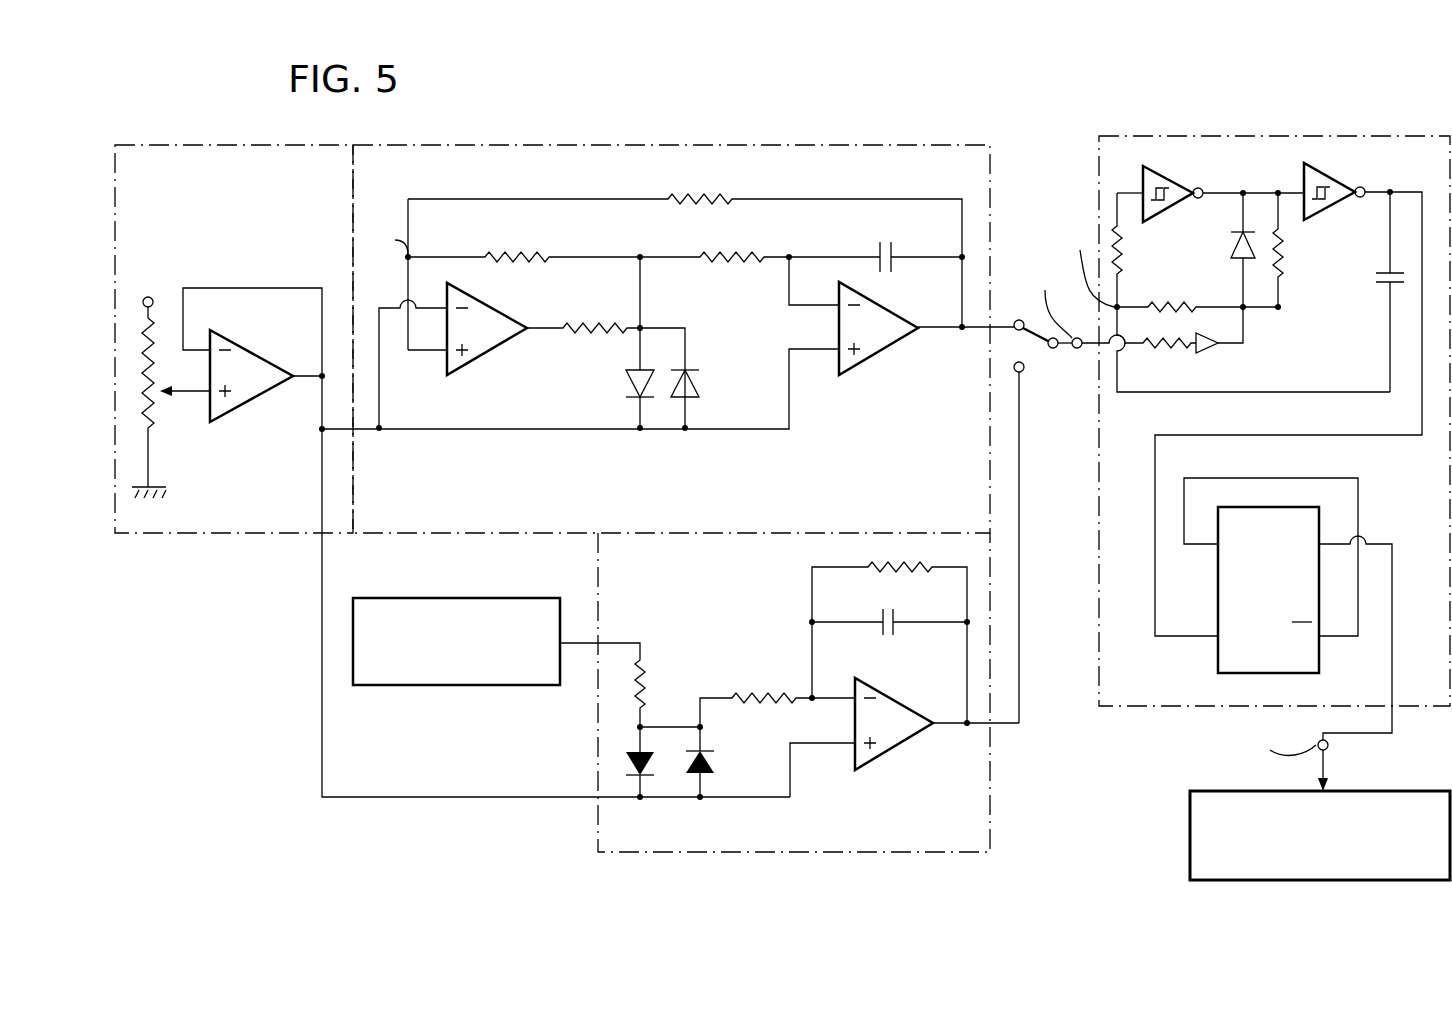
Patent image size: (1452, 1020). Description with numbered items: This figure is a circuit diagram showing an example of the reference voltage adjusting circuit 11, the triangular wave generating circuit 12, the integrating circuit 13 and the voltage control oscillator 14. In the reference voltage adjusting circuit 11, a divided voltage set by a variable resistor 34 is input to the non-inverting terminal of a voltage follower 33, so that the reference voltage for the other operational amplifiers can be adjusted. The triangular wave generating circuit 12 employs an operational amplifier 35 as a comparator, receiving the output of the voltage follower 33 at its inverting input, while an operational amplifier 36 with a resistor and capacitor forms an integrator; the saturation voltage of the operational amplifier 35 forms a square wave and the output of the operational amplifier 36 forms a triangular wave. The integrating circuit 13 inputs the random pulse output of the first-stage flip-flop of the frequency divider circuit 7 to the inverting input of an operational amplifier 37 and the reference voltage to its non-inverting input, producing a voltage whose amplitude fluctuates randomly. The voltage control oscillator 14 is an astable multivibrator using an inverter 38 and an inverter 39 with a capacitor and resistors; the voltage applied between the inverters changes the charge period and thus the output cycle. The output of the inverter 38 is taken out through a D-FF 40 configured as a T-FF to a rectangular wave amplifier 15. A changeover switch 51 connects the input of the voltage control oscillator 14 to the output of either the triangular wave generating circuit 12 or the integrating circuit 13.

The frequency divider circuit 7 is at (445, 688).
The reference voltage adjusting circuit 11 is at (260, 535).
The triangular wave generating circuit 12 is at (497, 535).
The integrating circuit 13 is at (598, 722).
The voltage control oscillator (VCO) 14 is at (1137, 706).
The rectangular wave amplifier 15 is at (1190, 838).
The voltage follower 33 is at (268, 278).
The variable resistor 34 is at (155, 410).
The operational amplifier 35 is at (510, 345).
The operational amplifier 36 is at (890, 352).
The operational amplifier 37 is at (900, 745).
The inverter 38 is at (1340, 178).
The inverter 39 is at (1178, 185).
The D-FF 40 is at (1277, 609).
The changeover switch 51 is at (1035, 347).